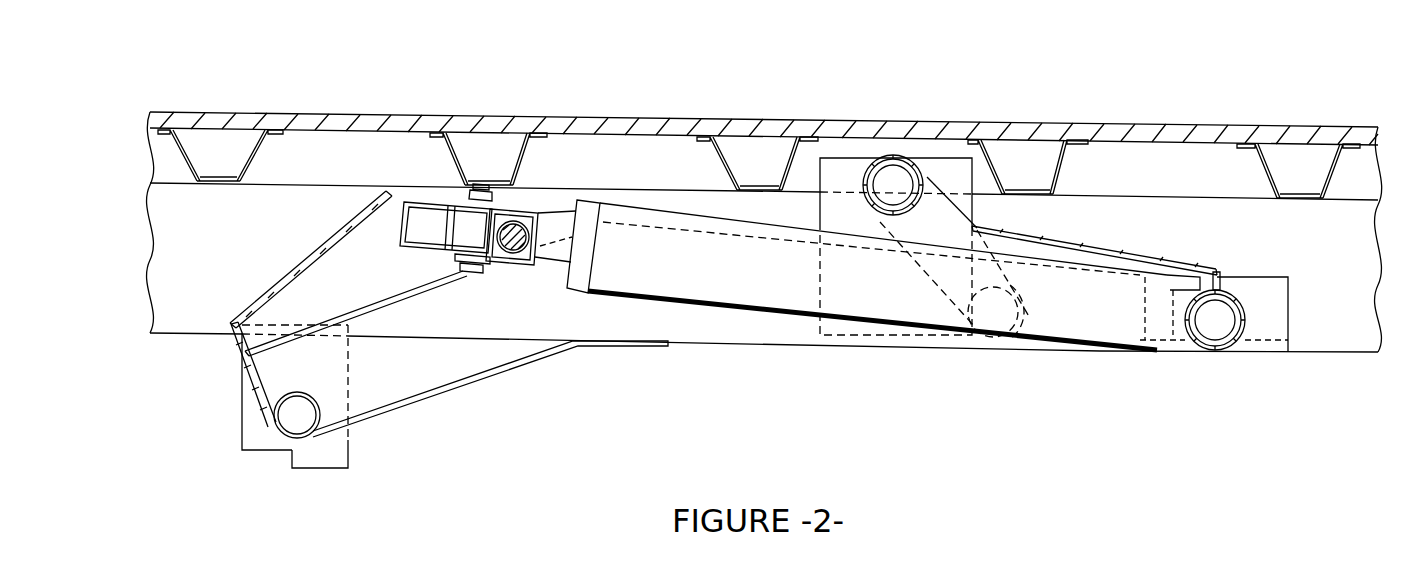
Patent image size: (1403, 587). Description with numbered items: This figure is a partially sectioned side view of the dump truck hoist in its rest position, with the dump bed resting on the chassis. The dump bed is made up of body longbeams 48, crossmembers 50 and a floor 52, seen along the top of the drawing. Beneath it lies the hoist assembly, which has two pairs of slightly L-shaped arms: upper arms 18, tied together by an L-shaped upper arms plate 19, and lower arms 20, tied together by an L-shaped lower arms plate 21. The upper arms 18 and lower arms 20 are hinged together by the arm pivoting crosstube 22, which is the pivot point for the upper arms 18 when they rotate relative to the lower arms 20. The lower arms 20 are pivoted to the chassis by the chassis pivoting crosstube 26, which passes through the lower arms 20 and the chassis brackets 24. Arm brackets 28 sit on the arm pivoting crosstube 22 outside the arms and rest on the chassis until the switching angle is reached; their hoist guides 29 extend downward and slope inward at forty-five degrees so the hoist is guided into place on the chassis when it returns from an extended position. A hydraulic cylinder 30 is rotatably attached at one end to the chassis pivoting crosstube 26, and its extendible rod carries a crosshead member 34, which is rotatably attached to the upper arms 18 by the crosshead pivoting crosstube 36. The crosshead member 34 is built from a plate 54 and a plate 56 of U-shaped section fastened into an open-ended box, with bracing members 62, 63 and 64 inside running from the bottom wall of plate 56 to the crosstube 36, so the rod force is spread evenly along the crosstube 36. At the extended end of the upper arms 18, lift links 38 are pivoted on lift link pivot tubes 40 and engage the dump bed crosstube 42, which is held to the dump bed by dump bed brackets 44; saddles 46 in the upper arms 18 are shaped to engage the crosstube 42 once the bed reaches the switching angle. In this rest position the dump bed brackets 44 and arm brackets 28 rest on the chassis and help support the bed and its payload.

The upper arms 18 is at (303, 302).
The upper arms plate 19 is at (293, 263).
The lower arms 20 is at (683, 322).
The lower arms plate 21 is at (1138, 252).
The arm pivoting crosstube 22 is at (293, 417).
The chassis brackets 24 is at (1267, 327).
The chassis pivoting crosstube 26 is at (1217, 322).
The arm brackets 28 is at (257, 438).
The hoist guides 29 is at (337, 460).
The hydraulic cylinder 30 is at (770, 290).
The crosshead member 34 is at (497, 207).
The crosshead pivoting crosstube 36 is at (515, 228).
The lift links 38 is at (940, 207).
The lift link pivot tubes 40 is at (982, 335).
The dump bed crosstube 42 is at (888, 178).
The dump bed brackets 44 is at (847, 327).
The saddles 46 is at (1123, 307).
The body longbeams 48 is at (1330, 320).
The crossmembers 50 is at (1263, 168).
The floor 52 is at (1313, 135).
The plate 54 is at (541, 268).
The plate 56 is at (400, 240).
The bracing member 62 is at (498, 268).
The bracing member 63 is at (458, 224).
The bracing member 64 is at (418, 222).